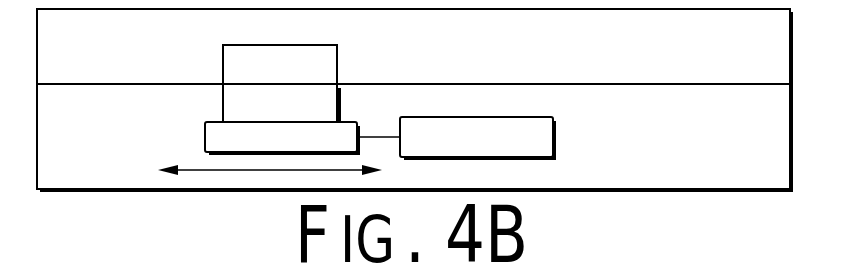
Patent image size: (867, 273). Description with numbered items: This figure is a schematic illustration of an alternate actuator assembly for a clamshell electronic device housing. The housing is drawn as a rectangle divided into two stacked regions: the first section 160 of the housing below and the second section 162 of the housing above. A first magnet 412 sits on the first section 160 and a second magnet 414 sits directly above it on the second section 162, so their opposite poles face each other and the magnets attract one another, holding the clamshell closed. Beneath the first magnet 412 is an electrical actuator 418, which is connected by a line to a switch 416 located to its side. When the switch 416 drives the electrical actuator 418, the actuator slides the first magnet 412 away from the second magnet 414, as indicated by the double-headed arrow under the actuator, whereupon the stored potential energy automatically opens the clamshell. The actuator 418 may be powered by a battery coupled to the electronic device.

The first section of the housing 160 is at (743, 147).
The second section of the housing 162 is at (743, 57).
The first magnet 412 is at (260, 112).
The second magnet 414 is at (260, 74).
The switch 416 is at (455, 145).
The electrical actuator 418 is at (260, 145).